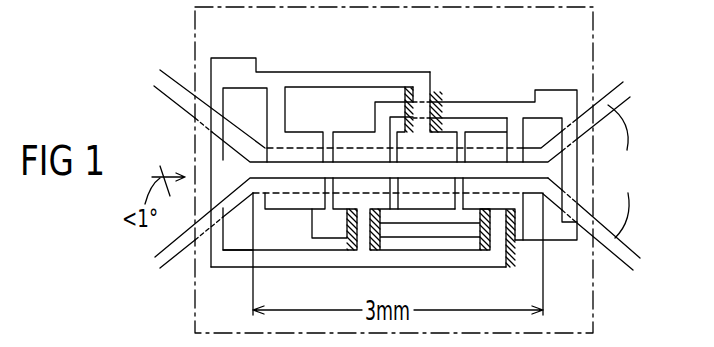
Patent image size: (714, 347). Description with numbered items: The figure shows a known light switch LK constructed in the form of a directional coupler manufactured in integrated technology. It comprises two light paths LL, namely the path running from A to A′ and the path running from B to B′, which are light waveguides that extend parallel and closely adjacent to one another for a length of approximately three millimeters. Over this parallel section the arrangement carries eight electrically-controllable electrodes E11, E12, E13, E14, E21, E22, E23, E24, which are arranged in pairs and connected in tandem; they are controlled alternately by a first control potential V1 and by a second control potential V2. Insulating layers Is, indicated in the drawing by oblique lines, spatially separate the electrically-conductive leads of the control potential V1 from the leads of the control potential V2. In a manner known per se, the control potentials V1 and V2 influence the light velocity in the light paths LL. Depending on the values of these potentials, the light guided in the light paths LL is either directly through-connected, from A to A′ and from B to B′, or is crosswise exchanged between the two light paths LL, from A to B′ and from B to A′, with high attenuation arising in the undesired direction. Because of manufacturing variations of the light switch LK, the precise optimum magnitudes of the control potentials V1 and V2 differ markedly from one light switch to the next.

The light switch LK is at (193, 28).
The first control potential V1 is at (228, 68).
The second control potential V2 is at (552, 105).
The insulating layers Is is at (432, 93).
The electrically-controllable electrode E11 is at (302, 140).
The electrically-controllable electrode E12 is at (350, 142).
The electrically-controllable electrode E13 is at (443, 142).
The electrically-controllable electrode E14 is at (488, 142).
The electrically-controllable electrode E21 is at (292, 198).
The electrically-controllable electrode E22 is at (342, 200).
The electrically-controllable electrode E23 is at (450, 202).
The electrically-controllable electrode E24 is at (517, 207).
The light path end A is at (334, 103).
The light path end A′ is at (585, 102).
The light path end B is at (344, 232).
The light path end B′ is at (590, 236).
The light paths LL is at (623, 171).